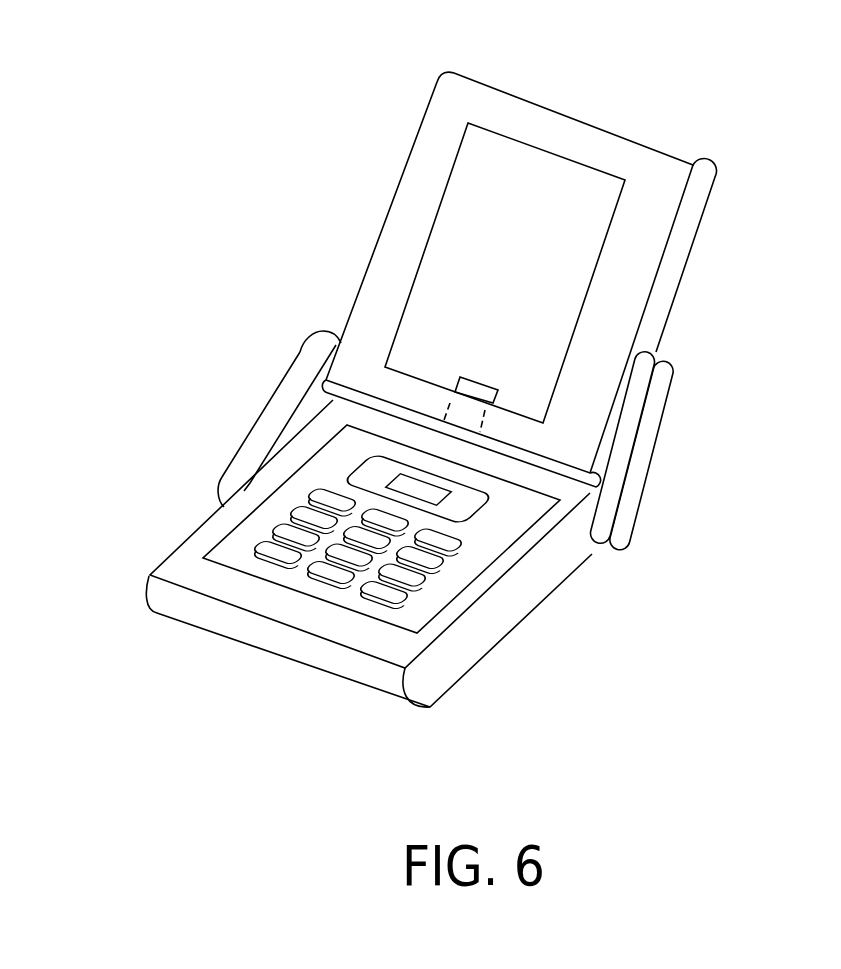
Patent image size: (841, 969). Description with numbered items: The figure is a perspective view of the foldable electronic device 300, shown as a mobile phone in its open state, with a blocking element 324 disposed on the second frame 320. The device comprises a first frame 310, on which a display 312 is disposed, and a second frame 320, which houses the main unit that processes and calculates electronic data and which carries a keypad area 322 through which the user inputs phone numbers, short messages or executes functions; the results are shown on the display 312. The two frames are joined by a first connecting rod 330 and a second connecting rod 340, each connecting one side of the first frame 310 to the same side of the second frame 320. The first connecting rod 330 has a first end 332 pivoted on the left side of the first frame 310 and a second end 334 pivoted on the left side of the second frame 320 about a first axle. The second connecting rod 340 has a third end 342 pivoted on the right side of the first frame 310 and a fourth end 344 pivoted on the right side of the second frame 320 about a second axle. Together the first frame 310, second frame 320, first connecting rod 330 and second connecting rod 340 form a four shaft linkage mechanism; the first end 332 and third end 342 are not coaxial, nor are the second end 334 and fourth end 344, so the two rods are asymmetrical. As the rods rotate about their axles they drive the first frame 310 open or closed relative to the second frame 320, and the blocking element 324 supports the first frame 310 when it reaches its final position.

The foldable electronic device 300 is at (690, 650).
The first frame 310 is at (403, 185).
The display 312 is at (528, 167).
The second frame 320 is at (187, 555).
The keypad area 322 is at (325, 568).
The blocking element 324 is at (483, 378).
The first connecting rod 330 is at (227, 252).
The first end 332 is at (311, 350).
The second end 334 is at (240, 470).
The second connecting rod 340 is at (768, 412).
The third end 342 is at (660, 372).
The fourth end 344 is at (632, 530).